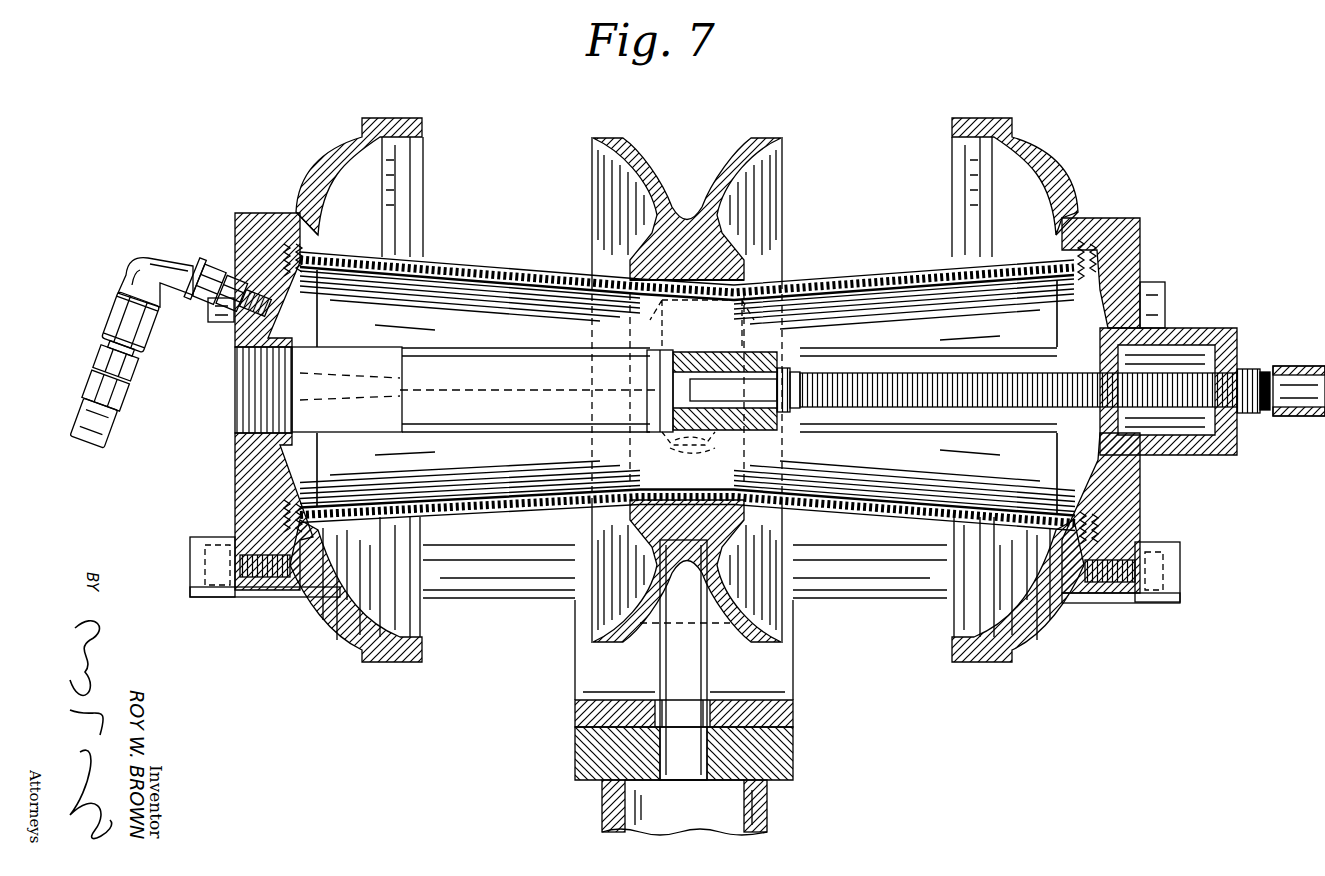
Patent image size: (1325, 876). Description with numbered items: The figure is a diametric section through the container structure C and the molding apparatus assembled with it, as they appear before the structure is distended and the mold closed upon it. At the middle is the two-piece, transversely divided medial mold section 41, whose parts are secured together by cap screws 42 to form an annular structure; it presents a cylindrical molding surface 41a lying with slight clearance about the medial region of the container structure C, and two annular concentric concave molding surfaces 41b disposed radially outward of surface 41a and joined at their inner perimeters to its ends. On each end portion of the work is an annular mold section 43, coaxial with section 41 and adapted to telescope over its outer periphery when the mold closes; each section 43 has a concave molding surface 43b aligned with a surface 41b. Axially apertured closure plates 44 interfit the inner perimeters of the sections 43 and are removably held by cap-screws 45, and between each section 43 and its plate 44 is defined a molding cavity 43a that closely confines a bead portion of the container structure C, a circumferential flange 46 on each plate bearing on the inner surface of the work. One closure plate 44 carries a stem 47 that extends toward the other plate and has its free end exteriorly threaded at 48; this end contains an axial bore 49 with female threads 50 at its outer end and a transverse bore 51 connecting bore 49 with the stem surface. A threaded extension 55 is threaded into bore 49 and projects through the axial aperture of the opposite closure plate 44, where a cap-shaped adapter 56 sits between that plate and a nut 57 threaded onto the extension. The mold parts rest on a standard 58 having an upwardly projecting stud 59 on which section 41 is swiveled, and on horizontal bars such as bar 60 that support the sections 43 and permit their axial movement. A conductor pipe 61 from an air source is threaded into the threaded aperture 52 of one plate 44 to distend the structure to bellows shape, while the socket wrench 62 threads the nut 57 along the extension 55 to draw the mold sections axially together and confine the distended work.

The medial mold section 41 is at (645, 165).
The cylindrical molding surface 41a is at (748, 282).
The concave molding surfaces 41b is at (612, 172).
The cap screws 42 is at (787, 282).
The annular mold sections 43 is at (338, 160).
The molding cavity 43a is at (312, 235).
The concave molding surface 43b is at (350, 158).
The closure plates 44 is at (250, 470).
The cap-screws 45 is at (215, 318).
The circumferential flange 46 is at (256, 288).
The stem 47 is at (463, 355).
The threaded end 48 is at (760, 348).
The axial bore 49 is at (732, 432).
The female threads 50 is at (783, 432).
The transverse bore 51 is at (663, 393).
The threaded aperture 52 is at (260, 300).
The threaded extension 55 is at (908, 373).
The cap-shaped adapter 56 is at (1218, 452).
The nut 57 is at (1247, 414).
The standard 58 is at (767, 808).
The stud 59 is at (707, 667).
The horizontal bar 60 is at (485, 596).
The conductor pipe 61 is at (85, 408).
The socket wrench 62 is at (1285, 370).
The container structure C is at (522, 275).